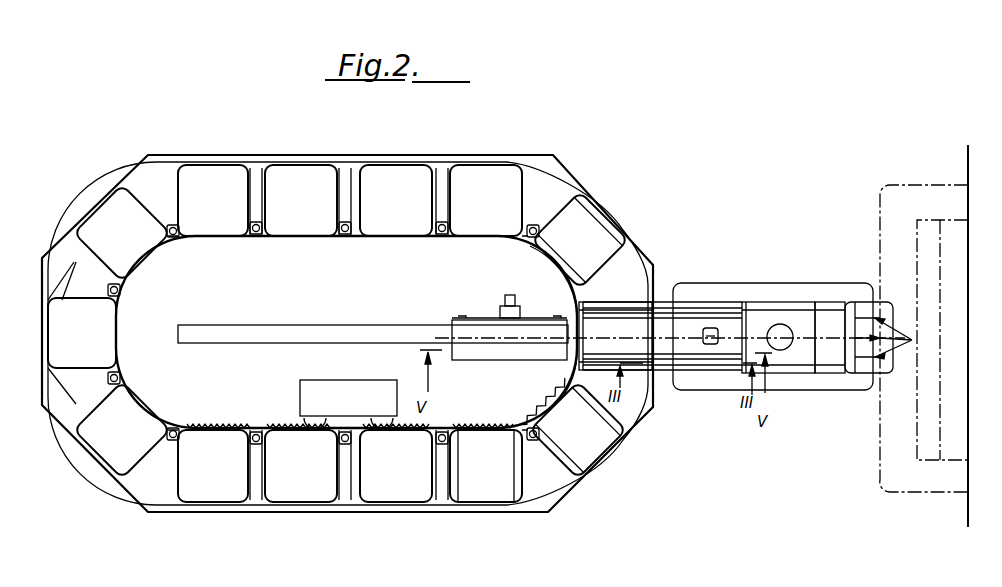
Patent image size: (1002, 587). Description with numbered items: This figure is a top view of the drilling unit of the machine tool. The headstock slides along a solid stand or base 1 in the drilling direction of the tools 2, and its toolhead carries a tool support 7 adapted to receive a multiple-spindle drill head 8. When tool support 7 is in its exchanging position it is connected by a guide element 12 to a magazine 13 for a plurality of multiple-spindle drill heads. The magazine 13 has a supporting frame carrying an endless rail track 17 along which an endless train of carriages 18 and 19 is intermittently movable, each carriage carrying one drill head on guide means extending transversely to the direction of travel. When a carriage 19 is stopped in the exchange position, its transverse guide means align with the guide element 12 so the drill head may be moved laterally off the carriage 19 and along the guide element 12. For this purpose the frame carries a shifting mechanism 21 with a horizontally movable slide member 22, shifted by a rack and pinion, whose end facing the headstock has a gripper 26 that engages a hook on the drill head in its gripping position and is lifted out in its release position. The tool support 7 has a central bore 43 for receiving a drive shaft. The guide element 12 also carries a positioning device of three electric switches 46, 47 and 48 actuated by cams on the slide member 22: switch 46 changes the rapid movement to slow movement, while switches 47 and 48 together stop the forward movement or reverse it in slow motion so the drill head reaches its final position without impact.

The stand or base 1 is at (823, 384).
The tools 2 is at (900, 338).
The tool support 7 is at (798, 307).
The multiple-spindle drill head 8 is at (830, 311).
The guide element 12 is at (684, 298).
The magazine 13 is at (224, 120).
The endless rail track 17 is at (152, 182).
The carriage 18 is at (108, 330).
The carriage 19 is at (613, 313).
The shifting mechanism 21 is at (424, 315).
The slide member 22 is at (328, 325).
The gripper 26 is at (572, 312).
The central bore 43 is at (783, 327).
The electric switch 46 is at (718, 328).
The electric switch 47 is at (705, 335).
The electric switch 48 is at (714, 345).